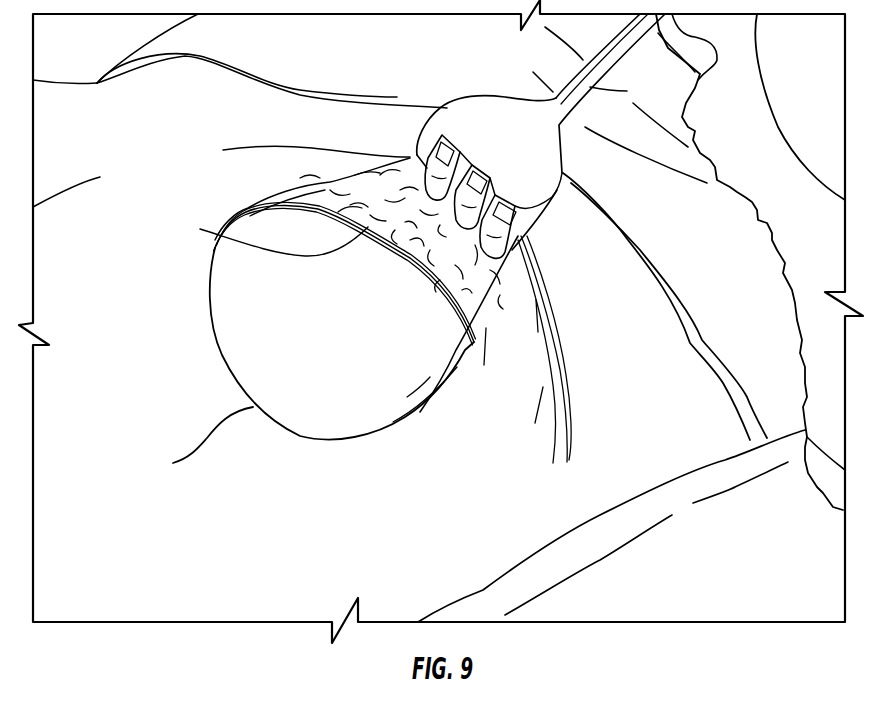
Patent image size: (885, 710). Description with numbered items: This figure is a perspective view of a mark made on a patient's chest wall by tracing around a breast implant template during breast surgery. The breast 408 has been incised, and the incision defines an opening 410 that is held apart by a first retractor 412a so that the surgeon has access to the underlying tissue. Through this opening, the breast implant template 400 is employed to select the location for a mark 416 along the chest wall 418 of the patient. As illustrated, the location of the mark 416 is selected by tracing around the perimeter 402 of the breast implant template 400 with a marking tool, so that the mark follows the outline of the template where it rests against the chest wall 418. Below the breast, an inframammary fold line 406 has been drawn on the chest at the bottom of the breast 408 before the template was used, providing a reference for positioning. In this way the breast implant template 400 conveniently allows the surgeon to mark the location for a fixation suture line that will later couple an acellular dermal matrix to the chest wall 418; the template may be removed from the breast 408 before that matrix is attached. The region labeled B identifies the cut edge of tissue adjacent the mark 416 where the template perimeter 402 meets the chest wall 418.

The breast implant template 400 is at (237, 315).
The perimeter 402 is at (455, 325).
The inframammary fold line 406 is at (547, 400).
The breast 408 is at (543, 335).
The opening 410 is at (173, 463).
The first retractor 412a is at (505, 118).
The mark 416 is at (200, 229).
The chest wall 418 is at (356, 203).
The capsule cut edge B is at (457, 302).